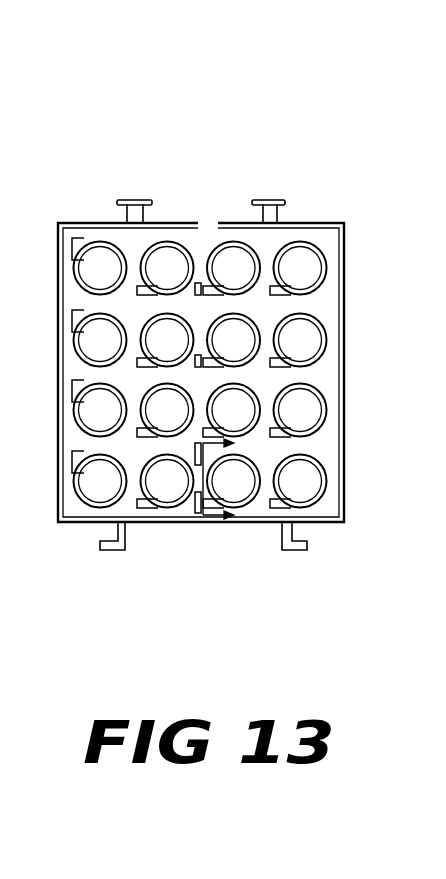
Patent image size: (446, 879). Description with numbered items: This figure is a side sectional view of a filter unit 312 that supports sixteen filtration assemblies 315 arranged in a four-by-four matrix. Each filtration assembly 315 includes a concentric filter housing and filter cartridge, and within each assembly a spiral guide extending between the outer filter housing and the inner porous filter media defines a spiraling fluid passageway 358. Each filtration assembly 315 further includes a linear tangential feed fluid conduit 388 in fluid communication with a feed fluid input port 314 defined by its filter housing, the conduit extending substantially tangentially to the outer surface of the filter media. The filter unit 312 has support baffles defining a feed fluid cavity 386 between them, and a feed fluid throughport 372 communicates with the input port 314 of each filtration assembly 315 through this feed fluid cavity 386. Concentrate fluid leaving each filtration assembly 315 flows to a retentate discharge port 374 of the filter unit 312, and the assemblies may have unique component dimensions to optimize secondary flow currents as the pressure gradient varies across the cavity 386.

The filter unit 312 is at (229, 329).
The feed fluid throughport 372 is at (127, 200).
The retentate discharge port 374 is at (272, 200).
The filtration assembly 315 is at (322, 323).
The spiraling fluid passageway 358 is at (322, 467).
The feed fluid input port 314 is at (293, 493).
The feed fluid cavity 386 is at (328, 510).
The linear tangential feed fluid conduit 388 is at (279, 509).